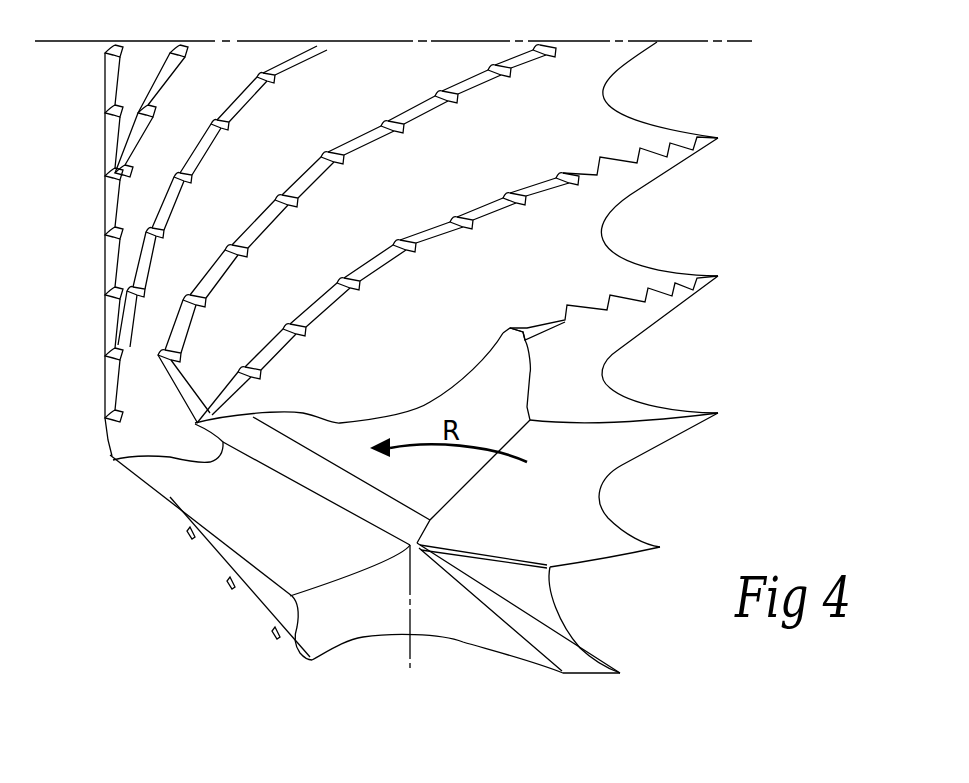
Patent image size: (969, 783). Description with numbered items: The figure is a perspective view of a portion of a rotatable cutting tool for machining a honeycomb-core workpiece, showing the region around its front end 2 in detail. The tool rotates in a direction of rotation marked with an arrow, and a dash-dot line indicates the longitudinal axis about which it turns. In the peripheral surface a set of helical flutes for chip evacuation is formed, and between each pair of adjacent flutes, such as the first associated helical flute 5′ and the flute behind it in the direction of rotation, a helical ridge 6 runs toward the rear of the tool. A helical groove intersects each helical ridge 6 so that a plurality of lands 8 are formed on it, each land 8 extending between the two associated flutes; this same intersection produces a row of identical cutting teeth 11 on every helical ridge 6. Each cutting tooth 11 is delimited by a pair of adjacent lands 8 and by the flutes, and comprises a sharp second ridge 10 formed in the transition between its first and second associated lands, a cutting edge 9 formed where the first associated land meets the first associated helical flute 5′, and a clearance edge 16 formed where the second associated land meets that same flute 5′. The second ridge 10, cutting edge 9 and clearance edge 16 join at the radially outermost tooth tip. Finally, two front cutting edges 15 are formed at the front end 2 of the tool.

The front end 2 is at (443, 617).
The first associated helical flute 5′ is at (225, 345).
The helical ridge 6 is at (265, 345).
The land 8 is at (500, 207).
The cutting edge 9 is at (440, 230).
The second ridge 10 is at (289, 325).
The cutting tooth 11 is at (262, 186).
The front cutting edge 15 is at (618, 615).
The clearance edge 16 is at (440, 230).